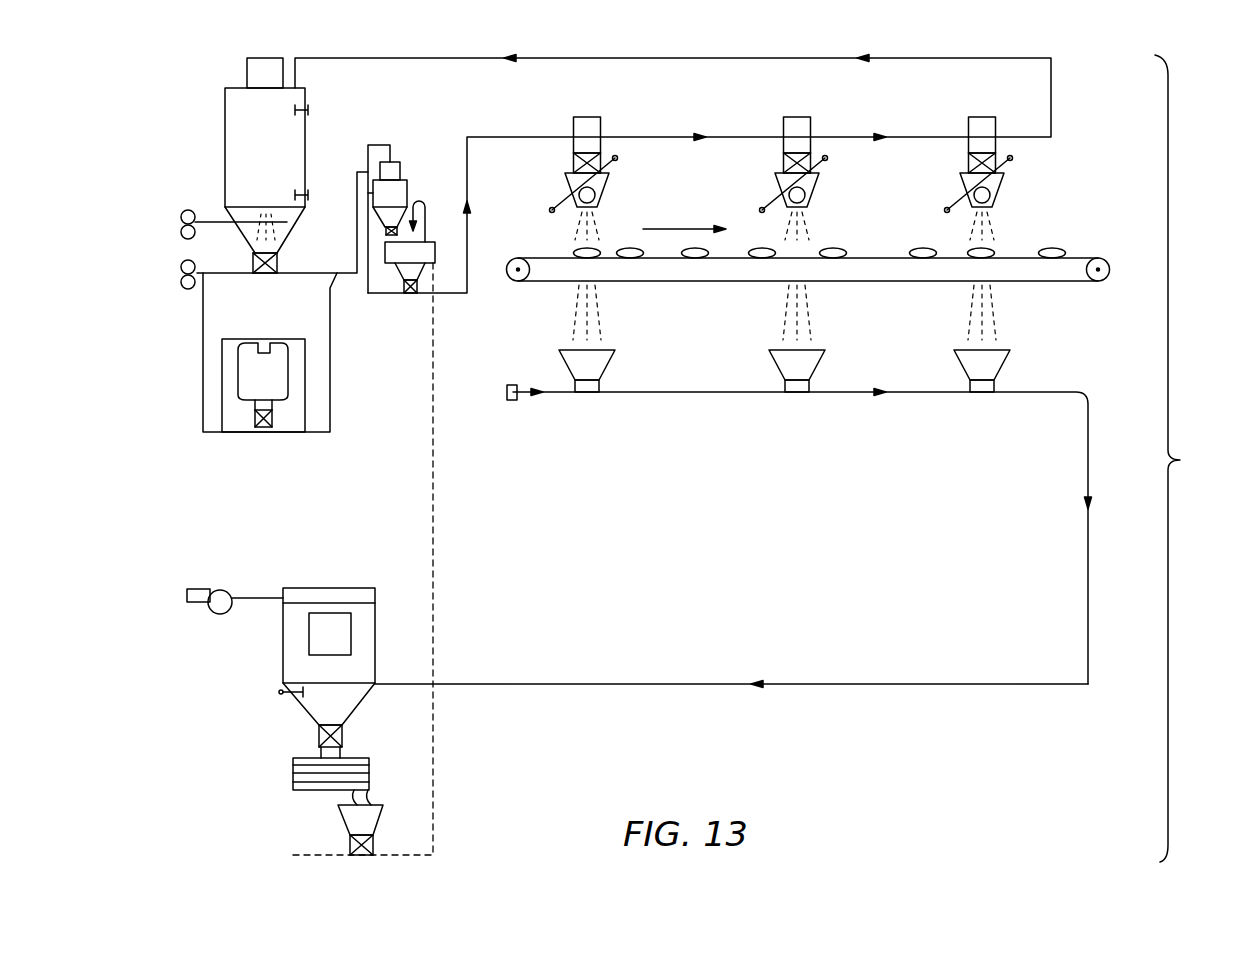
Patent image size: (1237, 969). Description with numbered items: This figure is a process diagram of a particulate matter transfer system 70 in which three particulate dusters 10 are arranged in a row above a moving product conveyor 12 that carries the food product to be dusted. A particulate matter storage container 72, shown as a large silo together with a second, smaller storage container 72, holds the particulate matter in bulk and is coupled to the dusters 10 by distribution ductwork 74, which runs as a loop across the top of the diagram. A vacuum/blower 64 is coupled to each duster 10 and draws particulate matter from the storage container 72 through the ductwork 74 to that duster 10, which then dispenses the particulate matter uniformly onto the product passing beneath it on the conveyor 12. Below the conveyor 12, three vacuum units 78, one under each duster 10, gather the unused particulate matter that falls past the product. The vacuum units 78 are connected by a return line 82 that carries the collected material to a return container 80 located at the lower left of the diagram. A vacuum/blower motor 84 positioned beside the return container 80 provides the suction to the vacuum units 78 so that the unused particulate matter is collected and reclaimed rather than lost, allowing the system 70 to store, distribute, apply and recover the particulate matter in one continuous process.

The duster 10 is at (612, 190).
The conveyor 12 is at (1085, 243).
The vacuum/blower 64 is at (588, 147).
The particulate matter transfer system 70 is at (1194, 458).
The particulate matter storage container 72 is at (274, 157).
The distribution ductwork 74 is at (500, 137).
The vacuum unit 78 is at (580, 365).
The return container 80 is at (328, 630).
The return line 82 is at (643, 684).
The vacuum/blower motor 84 is at (221, 597).